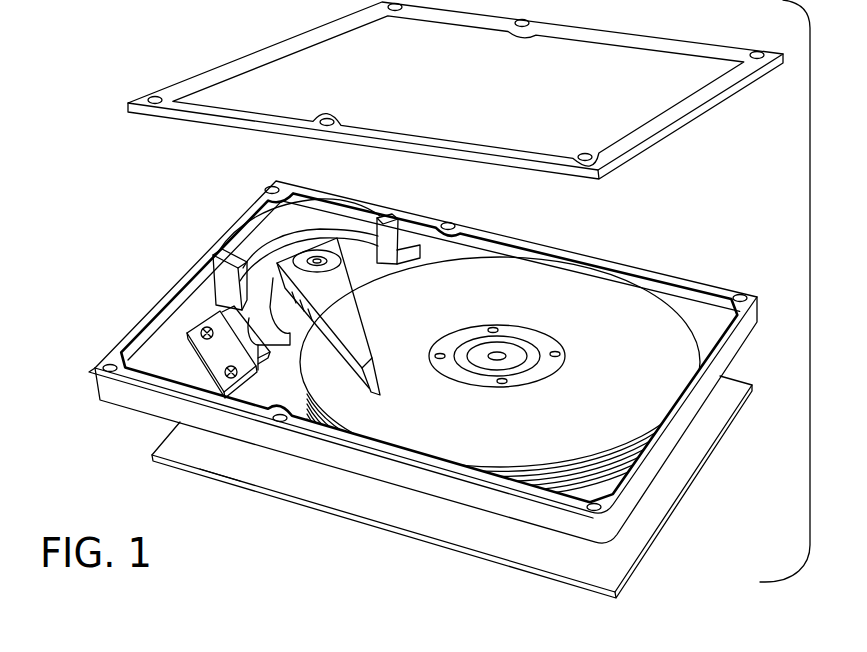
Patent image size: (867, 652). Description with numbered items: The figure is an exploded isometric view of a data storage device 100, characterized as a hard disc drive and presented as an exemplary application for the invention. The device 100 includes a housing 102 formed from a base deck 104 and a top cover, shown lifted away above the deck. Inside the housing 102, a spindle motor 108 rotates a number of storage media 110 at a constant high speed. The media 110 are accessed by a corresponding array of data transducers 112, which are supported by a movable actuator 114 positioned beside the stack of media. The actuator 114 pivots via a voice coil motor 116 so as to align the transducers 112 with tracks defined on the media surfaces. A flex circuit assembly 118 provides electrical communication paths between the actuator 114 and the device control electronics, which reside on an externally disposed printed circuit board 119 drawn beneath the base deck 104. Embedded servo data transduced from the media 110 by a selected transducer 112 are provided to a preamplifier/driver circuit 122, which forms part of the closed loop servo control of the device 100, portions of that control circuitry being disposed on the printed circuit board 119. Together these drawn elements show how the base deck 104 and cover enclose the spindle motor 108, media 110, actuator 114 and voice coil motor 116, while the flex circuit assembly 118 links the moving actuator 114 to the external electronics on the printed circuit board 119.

The data storage device 100 is at (182, 35).
The housing 102 is at (160, 219).
The base deck 104 is at (663, 440).
The spindle motor 108 is at (517, 356).
The storage media 110 is at (524, 470).
The data transducers 112 is at (381, 396).
The actuator 114 is at (352, 325).
The voice coil motor 116 is at (323, 223).
The flex circuit assembly 118 is at (216, 404).
The printed circuit board 119 is at (222, 483).
The preamplifier/driver circuit 122 is at (280, 284).